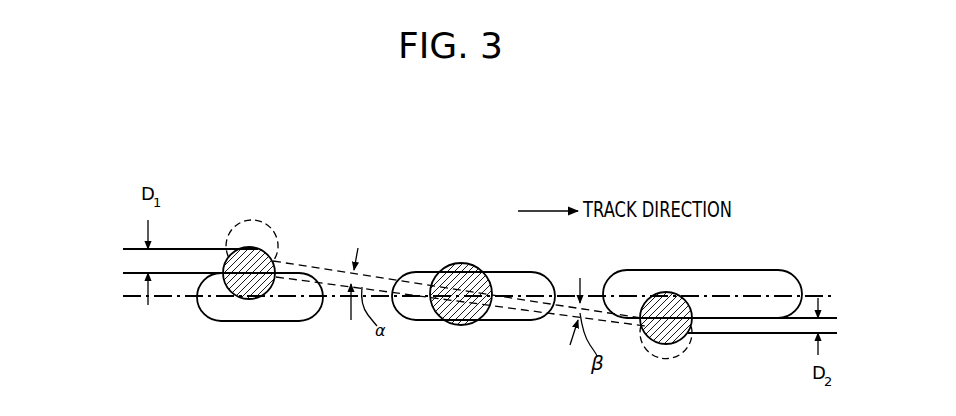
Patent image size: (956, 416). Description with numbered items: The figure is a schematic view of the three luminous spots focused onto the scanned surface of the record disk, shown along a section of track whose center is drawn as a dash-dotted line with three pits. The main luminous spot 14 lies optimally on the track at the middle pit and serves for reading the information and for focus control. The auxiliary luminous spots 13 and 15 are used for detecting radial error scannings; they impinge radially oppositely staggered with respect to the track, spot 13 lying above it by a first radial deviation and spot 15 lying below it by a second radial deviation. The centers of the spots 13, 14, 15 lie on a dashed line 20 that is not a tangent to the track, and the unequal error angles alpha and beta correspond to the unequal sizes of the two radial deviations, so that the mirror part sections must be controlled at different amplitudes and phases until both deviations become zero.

The auxiliary luminous spot 13 is at (242, 300).
The main luminous spot 14 is at (466, 313).
The auxiliary luminous spot 15 is at (675, 340).
The tilted scanning track 20 is at (402, 271).